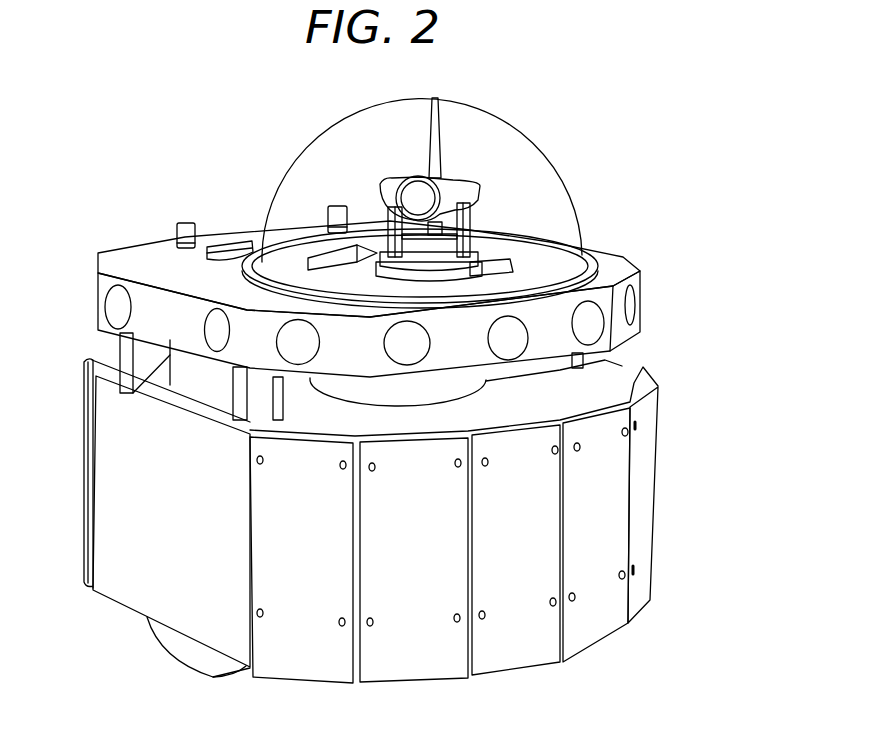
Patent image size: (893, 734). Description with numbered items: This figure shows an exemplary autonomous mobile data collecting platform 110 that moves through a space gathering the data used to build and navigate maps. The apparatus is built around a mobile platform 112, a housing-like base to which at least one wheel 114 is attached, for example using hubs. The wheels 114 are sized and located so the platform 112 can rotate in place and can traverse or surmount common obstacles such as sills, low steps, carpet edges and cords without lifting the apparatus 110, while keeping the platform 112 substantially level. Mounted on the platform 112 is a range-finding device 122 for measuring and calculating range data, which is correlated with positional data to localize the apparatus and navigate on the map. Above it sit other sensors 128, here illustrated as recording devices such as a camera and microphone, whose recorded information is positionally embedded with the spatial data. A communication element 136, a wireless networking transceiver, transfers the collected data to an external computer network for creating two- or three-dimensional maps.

The autonomous mobile data collecting platform 110 is at (696, 190).
The mobile platform 112 is at (655, 502).
The wheel 114 is at (187, 668).
The range-finding device 122 is at (620, 364).
The sensor 128 is at (380, 190).
The communication element 136 is at (440, 112).